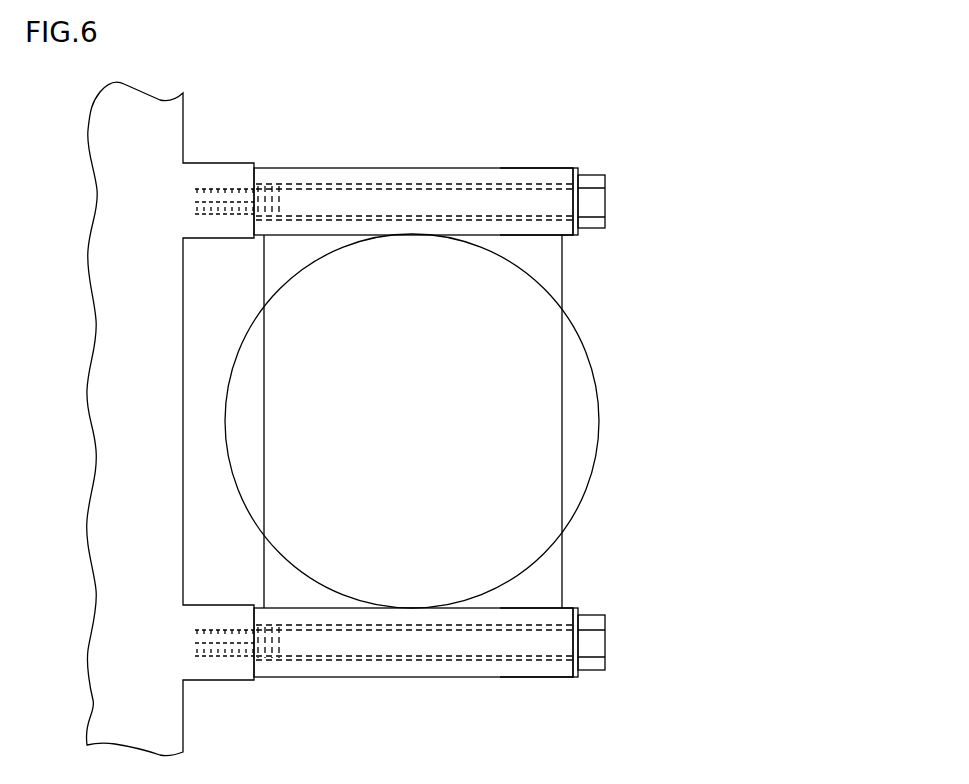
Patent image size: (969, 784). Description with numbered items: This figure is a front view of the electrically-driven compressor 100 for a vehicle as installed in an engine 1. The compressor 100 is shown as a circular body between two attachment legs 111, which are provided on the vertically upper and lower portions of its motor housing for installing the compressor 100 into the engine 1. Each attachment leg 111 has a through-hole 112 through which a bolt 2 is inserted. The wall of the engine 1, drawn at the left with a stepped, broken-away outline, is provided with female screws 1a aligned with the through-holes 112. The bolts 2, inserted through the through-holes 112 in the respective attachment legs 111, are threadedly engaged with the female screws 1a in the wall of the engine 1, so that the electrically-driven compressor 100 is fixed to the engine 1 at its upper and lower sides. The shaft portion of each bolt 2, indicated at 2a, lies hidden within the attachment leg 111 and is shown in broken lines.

The engine 1 is at (150, 93).
The female screw 1a is at (214, 188).
The bolt 2 is at (606, 200).
The bolt shaft 2a is at (470, 186).
The electrically-driven compressor 100 is at (598, 446).
The attachment leg 111 is at (403, 168).
The through-hole 112 is at (529, 168).